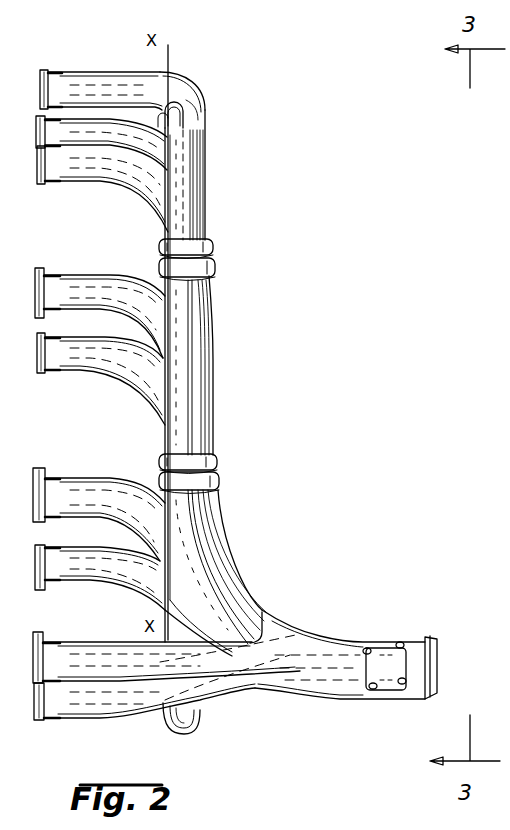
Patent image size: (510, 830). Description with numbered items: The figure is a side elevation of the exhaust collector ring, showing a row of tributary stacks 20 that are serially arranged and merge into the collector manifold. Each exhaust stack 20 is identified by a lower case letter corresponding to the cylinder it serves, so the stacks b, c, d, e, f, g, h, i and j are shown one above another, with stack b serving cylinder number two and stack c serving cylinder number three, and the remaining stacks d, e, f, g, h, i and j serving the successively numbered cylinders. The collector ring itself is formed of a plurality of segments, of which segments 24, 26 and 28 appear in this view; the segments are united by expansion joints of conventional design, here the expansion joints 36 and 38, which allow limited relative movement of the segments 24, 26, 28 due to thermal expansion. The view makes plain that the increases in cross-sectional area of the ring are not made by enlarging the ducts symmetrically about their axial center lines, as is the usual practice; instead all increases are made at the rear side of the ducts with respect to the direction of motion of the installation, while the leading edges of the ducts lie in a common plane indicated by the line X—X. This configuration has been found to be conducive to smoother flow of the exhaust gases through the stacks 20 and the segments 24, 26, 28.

The tributary stack 20 is at (83, 84).
The segment 24 is at (317, 678).
The segment 26 is at (212, 377).
The segment 28 is at (205, 166).
The expansion joint 36 is at (219, 480).
The expansion joint 38 is at (206, 272).
The exhaust stack j is at (40, 90).
The exhaust stack i is at (36, 133).
The exhaust stack h is at (40, 182).
The exhaust stack g is at (36, 294).
The exhaust stack f is at (38, 363).
The exhaust stack e is at (34, 493).
The exhaust stack d is at (36, 567).
The exhaust stack c is at (33, 658).
The exhaust stack b is at (34, 703).